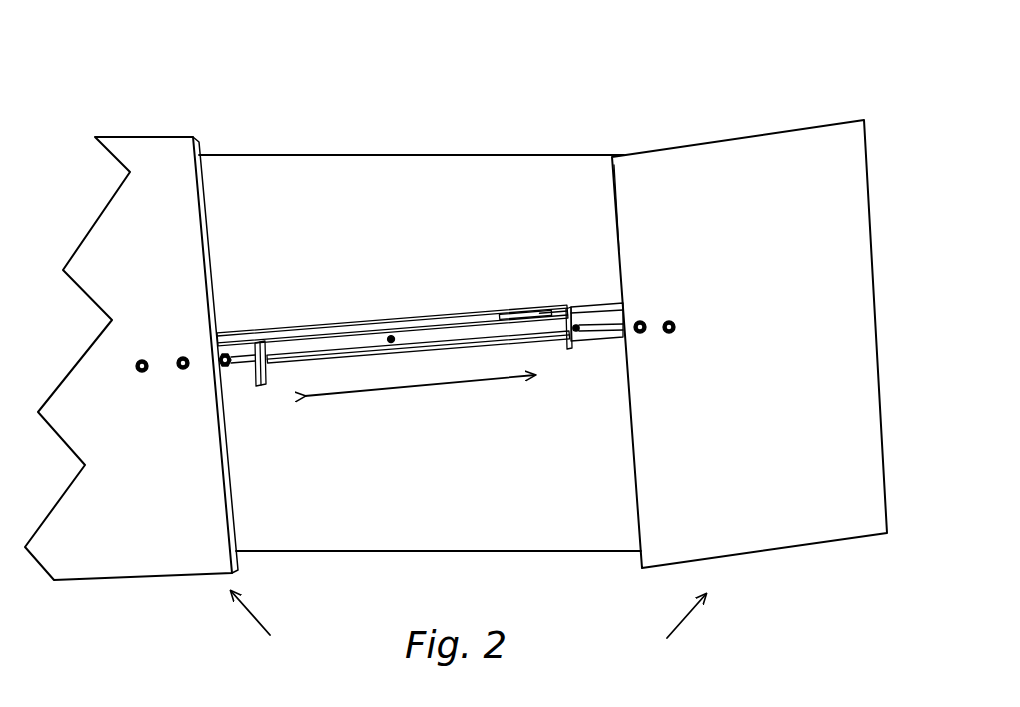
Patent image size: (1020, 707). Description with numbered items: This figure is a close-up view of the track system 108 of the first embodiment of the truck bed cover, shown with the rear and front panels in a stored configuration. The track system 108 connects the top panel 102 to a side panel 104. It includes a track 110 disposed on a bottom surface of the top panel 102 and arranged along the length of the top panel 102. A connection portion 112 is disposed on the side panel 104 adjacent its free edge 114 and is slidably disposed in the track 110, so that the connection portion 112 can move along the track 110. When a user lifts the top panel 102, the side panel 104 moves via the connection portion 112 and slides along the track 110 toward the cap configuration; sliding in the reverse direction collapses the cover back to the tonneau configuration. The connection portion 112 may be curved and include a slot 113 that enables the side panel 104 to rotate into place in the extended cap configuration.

The top panel 102 is at (417, 167).
The side panel 104 is at (742, 147).
The track system 108 is at (226, 95).
The track 110 is at (365, 325).
The connection portion 112 is at (575, 304).
The slot 113 is at (608, 333).
The free edge 114 is at (612, 203).